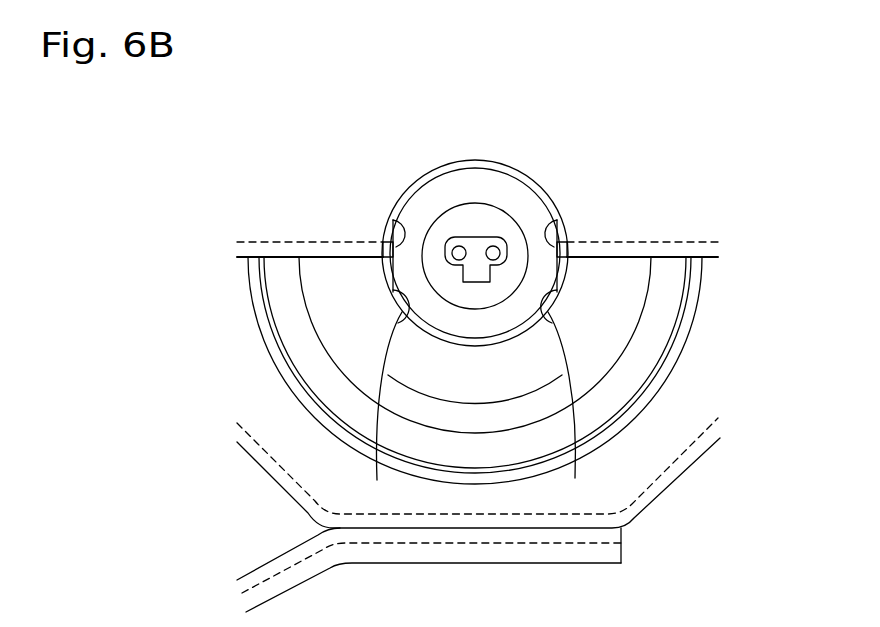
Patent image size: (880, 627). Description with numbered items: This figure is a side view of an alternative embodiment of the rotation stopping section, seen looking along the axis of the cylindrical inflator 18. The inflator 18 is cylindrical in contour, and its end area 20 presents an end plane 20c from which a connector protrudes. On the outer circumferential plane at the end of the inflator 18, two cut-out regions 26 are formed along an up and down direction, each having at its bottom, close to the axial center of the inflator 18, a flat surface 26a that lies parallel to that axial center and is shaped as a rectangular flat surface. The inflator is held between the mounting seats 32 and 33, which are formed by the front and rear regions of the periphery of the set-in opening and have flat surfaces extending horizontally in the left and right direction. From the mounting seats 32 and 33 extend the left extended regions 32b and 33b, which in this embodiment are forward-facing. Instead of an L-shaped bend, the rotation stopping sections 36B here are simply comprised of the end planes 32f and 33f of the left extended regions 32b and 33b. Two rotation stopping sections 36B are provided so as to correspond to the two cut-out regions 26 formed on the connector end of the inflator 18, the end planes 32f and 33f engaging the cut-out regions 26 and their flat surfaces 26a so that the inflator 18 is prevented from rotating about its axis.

The inflator 18 is at (324, 388).
The end area 20 is at (303, 360).
The end plane 20c is at (668, 278).
The cut-out region 26 is at (373, 283).
The flat surface 26a is at (476, 410).
The mounting seat 32 is at (311, 179).
The left extended region 32b is at (297, 250).
The end plane 32f is at (394, 238).
The mounting seat 33 is at (644, 179).
The left extended region 33b is at (660, 250).
The end plane 33f is at (556, 242).
The rotation stopping section 36B is at (383, 243).